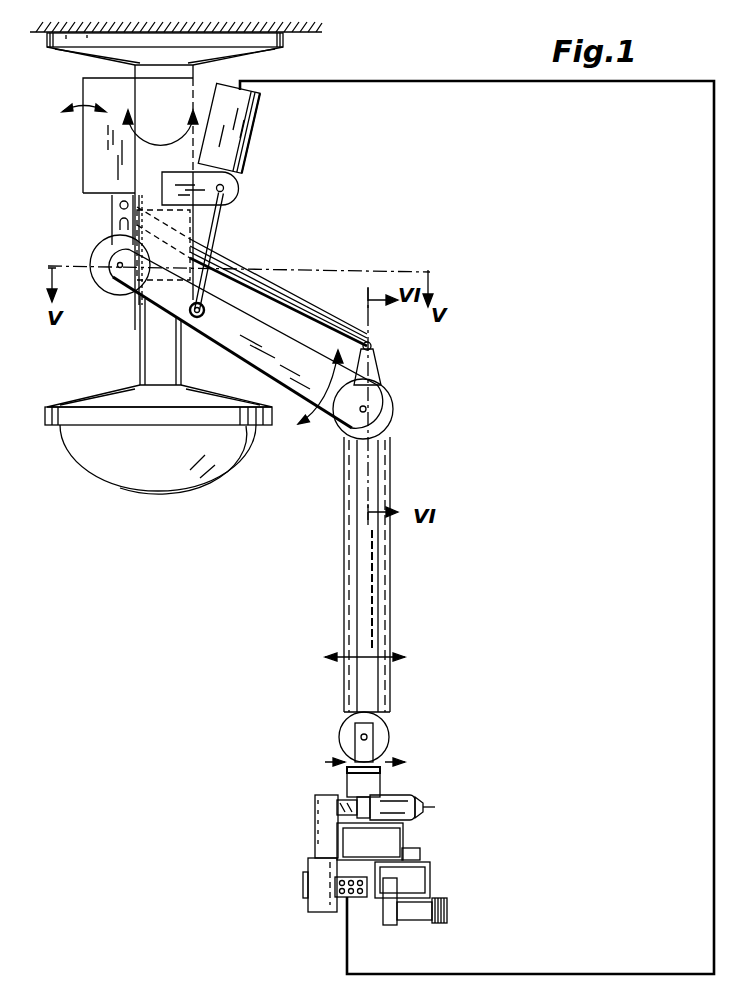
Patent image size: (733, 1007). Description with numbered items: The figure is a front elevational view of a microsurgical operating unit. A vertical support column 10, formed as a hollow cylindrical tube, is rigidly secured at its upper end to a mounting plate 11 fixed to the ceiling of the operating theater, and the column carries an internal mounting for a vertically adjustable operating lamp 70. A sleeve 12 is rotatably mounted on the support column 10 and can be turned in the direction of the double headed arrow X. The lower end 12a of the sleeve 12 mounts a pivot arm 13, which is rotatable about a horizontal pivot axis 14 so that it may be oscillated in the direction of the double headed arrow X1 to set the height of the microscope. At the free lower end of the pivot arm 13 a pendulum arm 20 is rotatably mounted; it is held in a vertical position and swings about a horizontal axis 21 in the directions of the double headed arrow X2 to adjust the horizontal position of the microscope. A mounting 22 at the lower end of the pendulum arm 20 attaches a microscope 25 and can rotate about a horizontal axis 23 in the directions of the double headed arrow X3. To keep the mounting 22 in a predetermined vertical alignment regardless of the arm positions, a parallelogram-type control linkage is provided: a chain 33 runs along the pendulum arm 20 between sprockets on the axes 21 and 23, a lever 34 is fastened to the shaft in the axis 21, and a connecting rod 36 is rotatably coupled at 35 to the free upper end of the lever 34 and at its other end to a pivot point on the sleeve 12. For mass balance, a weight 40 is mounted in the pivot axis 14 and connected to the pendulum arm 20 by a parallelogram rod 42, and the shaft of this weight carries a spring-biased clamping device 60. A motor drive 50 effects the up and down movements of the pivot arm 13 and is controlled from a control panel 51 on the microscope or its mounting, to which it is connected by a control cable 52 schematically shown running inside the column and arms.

The vertical support column 10 is at (192, 219).
The mounting plate 11 is at (286, 41).
The sleeve 12 is at (143, 163).
The lower end of the sleeve 12a is at (167, 253).
The pivot arm 13 is at (298, 390).
The horizontal pivot axis 14 is at (118, 263).
The pendulum arm 20 is at (347, 566).
The horizontal axis 21 is at (368, 410).
The mounting 22 is at (374, 743).
The horizontal axis 23 is at (369, 734).
The microscope 25 is at (316, 882).
The chain 33 is at (385, 586).
The lever 34 is at (374, 366).
The coupling point 35 is at (371, 345).
The connecting rod 36 is at (283, 303).
The weight 40 is at (95, 99).
The parallelogram rod 42 is at (242, 268).
The motor drive 50 is at (250, 146).
The control panel 51 is at (340, 898).
The control cable 52 is at (713, 548).
The clamping device 60 is at (102, 292).
The operating lamp 70 is at (105, 463).
The double headed arrow x X is at (140, 147).
The double headed arrow x1 X1 is at (320, 407).
The double headed arrow x2 X2 is at (348, 652).
The double headed arrow x3 X3 is at (340, 766).